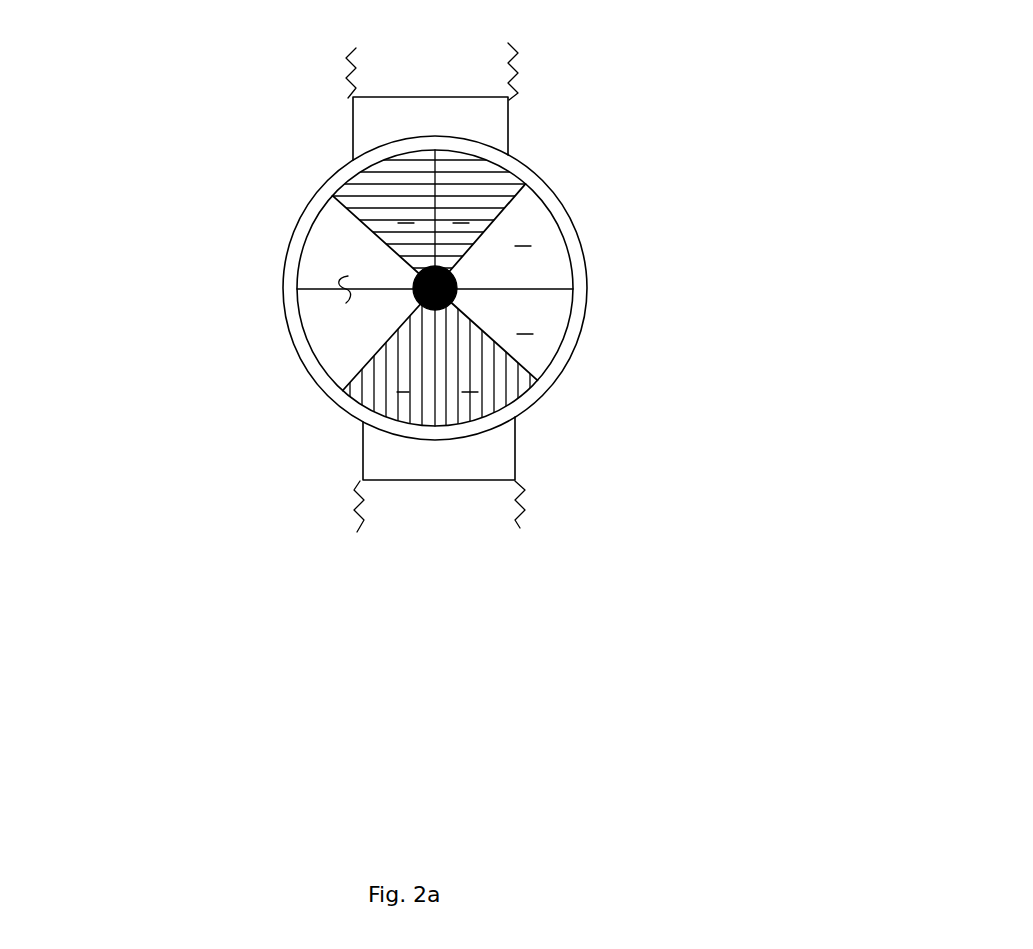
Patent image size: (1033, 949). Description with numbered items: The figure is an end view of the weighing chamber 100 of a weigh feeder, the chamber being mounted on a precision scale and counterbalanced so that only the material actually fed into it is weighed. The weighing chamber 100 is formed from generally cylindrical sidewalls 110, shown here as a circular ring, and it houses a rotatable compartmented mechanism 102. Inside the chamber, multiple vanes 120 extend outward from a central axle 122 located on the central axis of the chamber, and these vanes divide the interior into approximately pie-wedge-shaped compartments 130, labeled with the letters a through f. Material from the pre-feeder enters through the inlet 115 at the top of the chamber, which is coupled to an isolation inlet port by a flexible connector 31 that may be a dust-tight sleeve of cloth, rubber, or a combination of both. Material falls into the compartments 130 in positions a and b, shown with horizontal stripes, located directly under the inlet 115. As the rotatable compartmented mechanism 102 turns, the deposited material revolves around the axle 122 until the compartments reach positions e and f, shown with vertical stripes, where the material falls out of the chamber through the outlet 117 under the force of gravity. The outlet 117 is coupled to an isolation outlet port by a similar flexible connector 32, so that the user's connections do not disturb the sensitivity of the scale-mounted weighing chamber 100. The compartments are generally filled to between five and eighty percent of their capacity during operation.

The weighing chamber 100 is at (180, 232).
The rotatable compartmented mechanism 102 is at (347, 302).
The cylindrical sidewalls 110 is at (303, 333).
The inlet 115 is at (510, 118).
The outlet 117 is at (518, 448).
The vanes 120 is at (515, 367).
The axle 122 is at (457, 283).
The compartments 130 is at (490, 193).
The flexible connector 31 is at (518, 75).
The flexible connector 32 is at (525, 500).